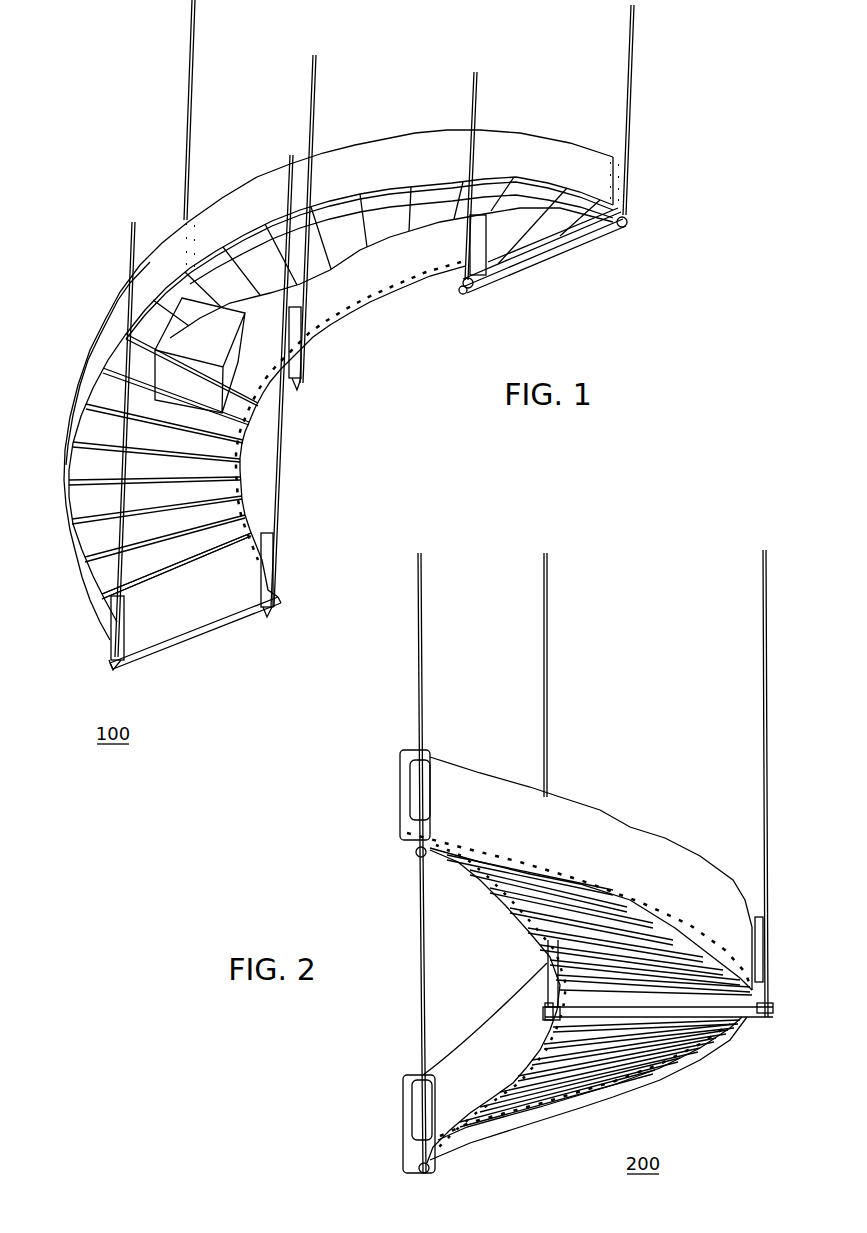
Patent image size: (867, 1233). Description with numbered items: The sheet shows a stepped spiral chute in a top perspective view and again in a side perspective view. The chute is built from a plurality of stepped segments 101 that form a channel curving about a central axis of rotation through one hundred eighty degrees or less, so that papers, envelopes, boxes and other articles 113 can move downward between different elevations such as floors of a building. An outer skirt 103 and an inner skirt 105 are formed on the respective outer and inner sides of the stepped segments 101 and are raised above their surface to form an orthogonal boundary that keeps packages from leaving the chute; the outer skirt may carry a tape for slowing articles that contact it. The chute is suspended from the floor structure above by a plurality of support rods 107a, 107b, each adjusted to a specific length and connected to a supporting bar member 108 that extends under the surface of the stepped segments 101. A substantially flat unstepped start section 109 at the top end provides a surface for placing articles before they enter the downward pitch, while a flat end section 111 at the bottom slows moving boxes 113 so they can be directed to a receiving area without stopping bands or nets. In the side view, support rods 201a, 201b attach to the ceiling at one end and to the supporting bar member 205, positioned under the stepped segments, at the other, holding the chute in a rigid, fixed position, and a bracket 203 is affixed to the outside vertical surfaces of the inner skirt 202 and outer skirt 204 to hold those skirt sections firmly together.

In FIG. 1, the stepped segments 101 is at (237, 610).
In FIG. 1, the outer skirt 103 is at (383, 283).
In FIG. 1, the inner skirt 105 is at (101, 337).
In FIG. 1, the support rod 107a is at (278, 422).
In FIG. 1, the support rod 107b is at (115, 540).
In FIG. 1, the supporting bar member 108 is at (533, 263).
In FIG. 1, the start section 109 is at (625, 227).
In FIG. 1, the end section 111 is at (177, 623).
In FIG. 1, the article 113 is at (193, 333).
In FIG. 2, the support rod 201a is at (765, 798).
In FIG. 2, the support rod 201b is at (548, 673).
In FIG. 2, the inner skirt 202 is at (480, 1050).
In FIG. 2, the bracket 203 is at (410, 808).
In FIG. 2, the outer skirt 204 is at (607, 830).
In FIG. 2, the supporting bar member 205 is at (720, 1012).